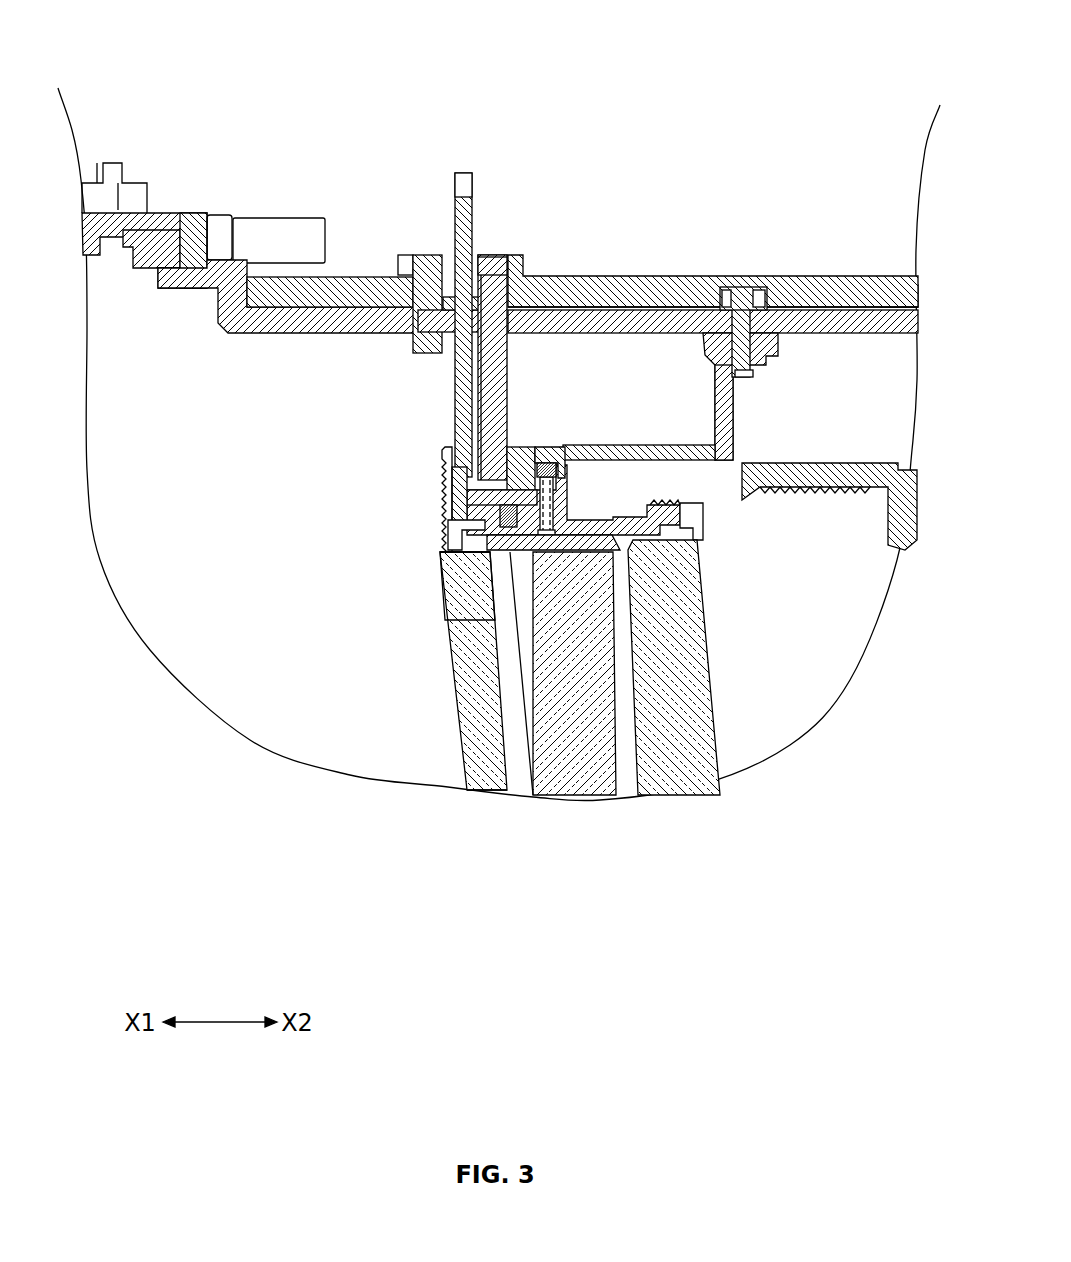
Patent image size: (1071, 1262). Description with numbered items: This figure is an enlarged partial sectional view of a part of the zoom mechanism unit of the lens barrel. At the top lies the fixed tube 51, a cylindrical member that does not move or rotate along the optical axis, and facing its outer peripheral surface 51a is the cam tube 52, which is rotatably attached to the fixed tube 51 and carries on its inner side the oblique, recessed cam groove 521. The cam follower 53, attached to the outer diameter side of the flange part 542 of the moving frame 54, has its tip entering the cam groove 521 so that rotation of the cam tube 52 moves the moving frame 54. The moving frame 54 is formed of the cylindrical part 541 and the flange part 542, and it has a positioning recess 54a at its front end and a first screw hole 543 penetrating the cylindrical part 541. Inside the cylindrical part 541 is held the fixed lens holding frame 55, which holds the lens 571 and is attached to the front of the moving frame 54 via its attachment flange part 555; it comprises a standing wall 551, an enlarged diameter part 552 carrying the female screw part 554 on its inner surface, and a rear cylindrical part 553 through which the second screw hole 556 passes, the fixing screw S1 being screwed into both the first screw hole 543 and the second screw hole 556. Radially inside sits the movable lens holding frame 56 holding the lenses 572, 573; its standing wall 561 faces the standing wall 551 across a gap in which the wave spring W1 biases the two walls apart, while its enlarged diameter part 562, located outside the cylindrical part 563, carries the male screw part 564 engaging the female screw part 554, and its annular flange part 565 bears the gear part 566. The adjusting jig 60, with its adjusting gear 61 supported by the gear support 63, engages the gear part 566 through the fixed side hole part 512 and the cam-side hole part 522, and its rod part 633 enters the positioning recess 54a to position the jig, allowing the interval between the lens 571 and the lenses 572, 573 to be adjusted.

The adjusting jig 60 is at (398, 82).
The adjusting gear 61 is at (463, 173).
The gear support 63 is at (430, 255).
The rod part 633 is at (505, 360).
The positioning recess 54a is at (490, 257).
The fixed tube 51 is at (845, 315).
The outer peripheral surface 51a is at (877, 285).
The fixed side hole part 512 is at (428, 262).
The cam tube 52 is at (640, 285).
The cam groove 521 is at (722, 288).
The cam-side hole part 522 is at (425, 300).
The cam follower 53 is at (750, 290).
The moving frame 54 is at (702, 333).
The cylindrical part 541 is at (620, 445).
The flange part 542 is at (732, 422).
The first screw hole 543 is at (555, 448).
The fixed lens holding frame 55 is at (565, 560).
The standing wall 551 is at (537, 440).
The enlarged diameter part 552 is at (478, 478).
The cylindrical part 553 is at (645, 507).
The female screw part 554 is at (467, 523).
The attachment flange part 555 is at (497, 485).
The second screw hole 556 is at (548, 568).
The movable lens holding frame 56 is at (500, 750).
The standing wall 561 is at (447, 557).
The enlarged diameter part 562 is at (453, 562).
The cylindrical part 563 is at (620, 552).
The male screw part 564 is at (482, 502).
The annular flange part 565 is at (462, 490).
The gear part 566 is at (446, 452).
The lens 571 is at (690, 775).
The lens 572 is at (590, 775).
The lens 573 is at (480, 790).
The fixing screw S1 is at (512, 580).
The wave spring W1 is at (483, 567).